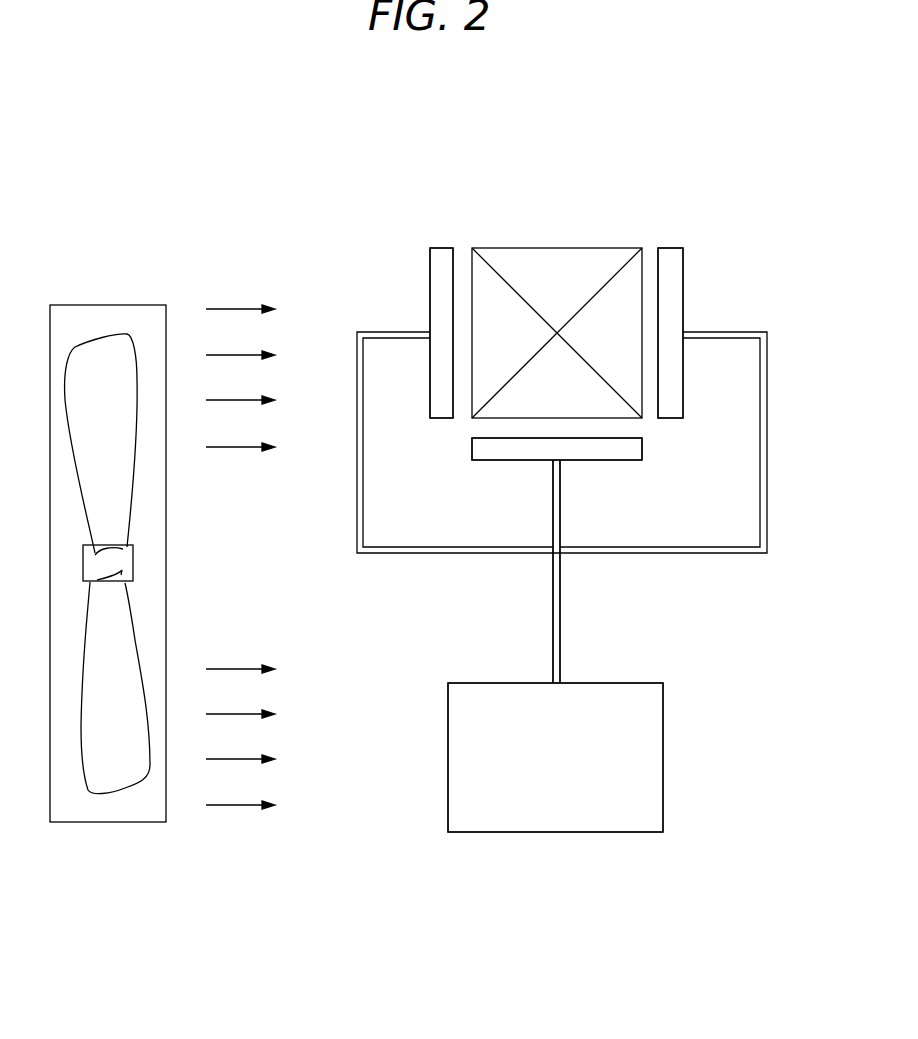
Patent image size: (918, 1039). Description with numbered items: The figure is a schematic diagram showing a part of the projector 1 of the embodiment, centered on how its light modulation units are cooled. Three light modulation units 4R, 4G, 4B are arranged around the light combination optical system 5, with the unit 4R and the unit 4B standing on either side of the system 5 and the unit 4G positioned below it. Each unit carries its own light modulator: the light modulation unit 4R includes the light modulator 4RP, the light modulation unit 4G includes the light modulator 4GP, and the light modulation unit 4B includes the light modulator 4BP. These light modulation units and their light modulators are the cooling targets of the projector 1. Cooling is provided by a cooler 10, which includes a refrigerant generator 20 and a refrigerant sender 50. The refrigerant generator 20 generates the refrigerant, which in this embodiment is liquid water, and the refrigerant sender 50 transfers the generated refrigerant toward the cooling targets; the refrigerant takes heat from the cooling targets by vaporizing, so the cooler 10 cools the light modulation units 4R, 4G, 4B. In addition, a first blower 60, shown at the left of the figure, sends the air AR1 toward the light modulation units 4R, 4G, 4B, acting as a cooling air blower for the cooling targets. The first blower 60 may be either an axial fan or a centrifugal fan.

The projector 1 is at (763, 136).
The first blower 60 is at (120, 312).
The air AR1 is at (243, 309).
The light modulation unit 4R is at (445, 236).
The light modulator 4RP is at (440, 281).
The light combination optical system 5 is at (570, 246).
The light modulation unit 4B is at (676, 236).
The light modulator 4BP is at (670, 281).
The light modulation unit 4G is at (656, 450).
The light modulator 4GP is at (606, 451).
The refrigerant sender 50 is at (575, 617).
The refrigerant generator 20 is at (665, 742).
The cooler 10 is at (747, 672).